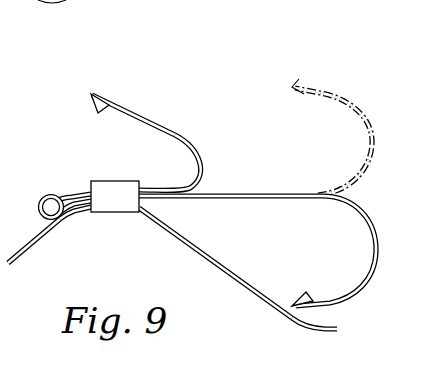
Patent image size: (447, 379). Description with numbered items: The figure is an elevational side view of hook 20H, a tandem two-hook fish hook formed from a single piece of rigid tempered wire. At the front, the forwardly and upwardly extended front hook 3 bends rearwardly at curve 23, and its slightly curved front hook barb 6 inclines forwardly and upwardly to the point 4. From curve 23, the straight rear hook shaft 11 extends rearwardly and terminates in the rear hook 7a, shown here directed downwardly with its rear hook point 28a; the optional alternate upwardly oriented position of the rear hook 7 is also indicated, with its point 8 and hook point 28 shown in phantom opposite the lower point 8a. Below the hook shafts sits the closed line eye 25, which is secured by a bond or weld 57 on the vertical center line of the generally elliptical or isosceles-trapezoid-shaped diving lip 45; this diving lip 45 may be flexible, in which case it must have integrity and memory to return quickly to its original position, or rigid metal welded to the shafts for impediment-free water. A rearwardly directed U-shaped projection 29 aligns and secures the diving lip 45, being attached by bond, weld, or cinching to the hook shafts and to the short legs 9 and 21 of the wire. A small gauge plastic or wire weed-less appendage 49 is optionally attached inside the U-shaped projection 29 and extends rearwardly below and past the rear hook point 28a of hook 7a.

The hook 20H is at (172, 81).
The front hook 3 is at (171, 133).
The point 4 is at (92, 95).
The front hook barb 6 is at (138, 114).
The rear hook 7 is at (370, 163).
The rear hook 7a is at (373, 264).
The hook point of second hook (phantom) 8 is at (352, 100).
The hook point of second hook (displaced) 8a is at (338, 290).
The short leg 9 is at (73, 190).
The rear hook shaft 11 is at (268, 200).
The short leg 21 is at (78, 210).
The curve 23 is at (207, 178).
The closed line eye 25 is at (50, 190).
The barb end of second hook (phantom) 28 is at (298, 80).
The rear hook point 28a is at (333, 330).
The U-shaped projection 29 is at (130, 210).
The diving lip 45 is at (19, 240).
The weed-less appendage 49 is at (238, 284).
The bond or weld 57 is at (57, 226).